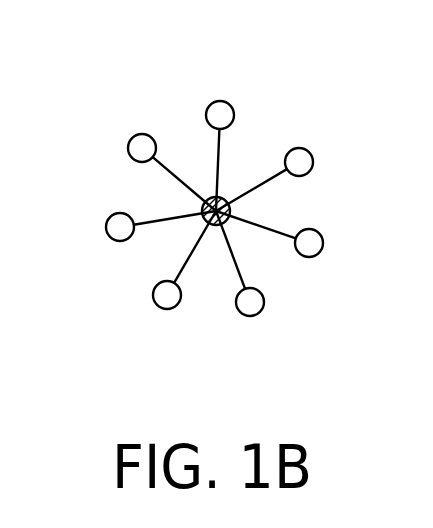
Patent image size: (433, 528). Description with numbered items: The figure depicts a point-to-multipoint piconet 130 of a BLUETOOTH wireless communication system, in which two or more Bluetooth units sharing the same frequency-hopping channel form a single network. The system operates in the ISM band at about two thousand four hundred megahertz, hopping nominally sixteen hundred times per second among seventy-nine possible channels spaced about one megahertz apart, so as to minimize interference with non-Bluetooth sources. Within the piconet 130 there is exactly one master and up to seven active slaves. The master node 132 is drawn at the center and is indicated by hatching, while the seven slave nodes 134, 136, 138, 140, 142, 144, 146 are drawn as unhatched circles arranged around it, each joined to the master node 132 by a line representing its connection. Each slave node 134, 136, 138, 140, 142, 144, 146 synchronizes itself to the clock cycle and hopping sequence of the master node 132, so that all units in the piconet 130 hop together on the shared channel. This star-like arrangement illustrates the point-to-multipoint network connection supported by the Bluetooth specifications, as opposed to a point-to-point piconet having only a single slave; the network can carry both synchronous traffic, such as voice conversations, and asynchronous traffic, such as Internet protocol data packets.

The piconet 130 is at (267, 100).
The master node 132 is at (231, 210).
The slave node 134 is at (320, 252).
The slave node 136 is at (262, 310).
The slave node 138 is at (153, 294).
The slave node 140 is at (106, 226).
The slave node 142 is at (128, 147).
The slave node 144 is at (206, 115).
The slave node 146 is at (310, 172).